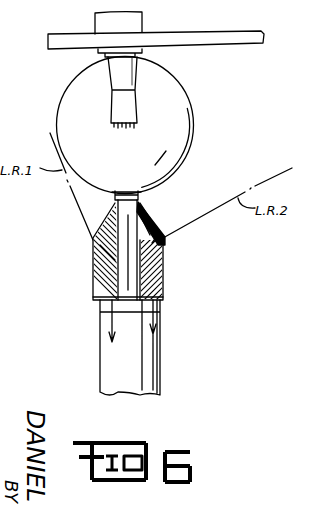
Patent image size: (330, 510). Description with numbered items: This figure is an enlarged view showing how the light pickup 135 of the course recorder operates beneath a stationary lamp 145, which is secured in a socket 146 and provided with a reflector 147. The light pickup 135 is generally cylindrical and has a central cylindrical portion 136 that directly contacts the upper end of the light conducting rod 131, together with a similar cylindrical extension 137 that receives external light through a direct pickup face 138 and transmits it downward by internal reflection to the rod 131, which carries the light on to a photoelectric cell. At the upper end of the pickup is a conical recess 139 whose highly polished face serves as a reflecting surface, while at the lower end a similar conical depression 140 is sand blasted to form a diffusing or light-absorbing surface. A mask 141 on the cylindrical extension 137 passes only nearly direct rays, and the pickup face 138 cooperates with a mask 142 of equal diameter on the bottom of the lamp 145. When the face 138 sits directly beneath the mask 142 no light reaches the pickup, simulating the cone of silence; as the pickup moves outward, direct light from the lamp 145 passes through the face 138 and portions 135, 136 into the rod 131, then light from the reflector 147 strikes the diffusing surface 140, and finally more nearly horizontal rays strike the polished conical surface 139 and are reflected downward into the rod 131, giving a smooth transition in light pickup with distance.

The light conducting rod 131 is at (160, 357).
The light pickup 135 is at (165, 266).
The central cylindrical portion 136 is at (165, 298).
The cylindrical extension 137 is at (152, 215).
The direct pickup face 138 is at (140, 197).
The conical recess 139 is at (93, 237).
The conical depression 140 is at (167, 282).
The mask 141 is at (165, 224).
The mask 142 is at (118, 195).
The lamp 145 is at (194, 138).
The socket 146 is at (144, 50).
The reflector 147 is at (237, 47).